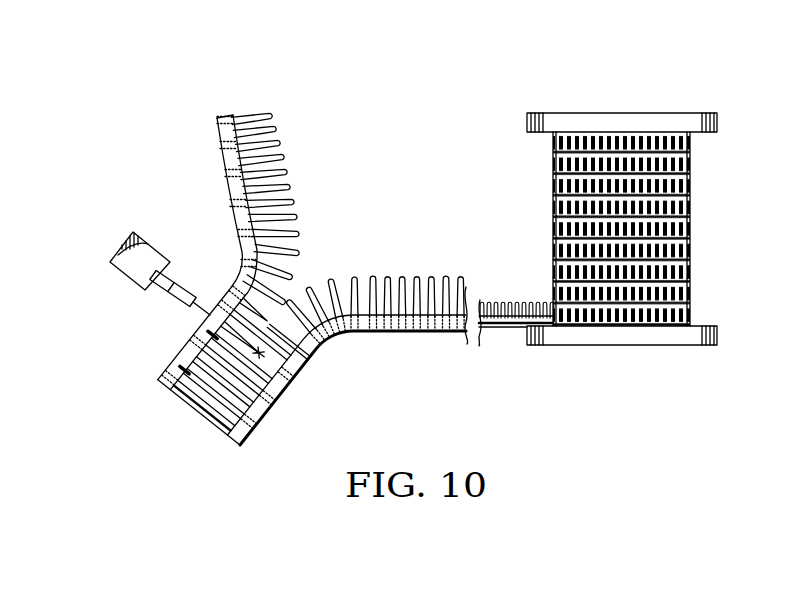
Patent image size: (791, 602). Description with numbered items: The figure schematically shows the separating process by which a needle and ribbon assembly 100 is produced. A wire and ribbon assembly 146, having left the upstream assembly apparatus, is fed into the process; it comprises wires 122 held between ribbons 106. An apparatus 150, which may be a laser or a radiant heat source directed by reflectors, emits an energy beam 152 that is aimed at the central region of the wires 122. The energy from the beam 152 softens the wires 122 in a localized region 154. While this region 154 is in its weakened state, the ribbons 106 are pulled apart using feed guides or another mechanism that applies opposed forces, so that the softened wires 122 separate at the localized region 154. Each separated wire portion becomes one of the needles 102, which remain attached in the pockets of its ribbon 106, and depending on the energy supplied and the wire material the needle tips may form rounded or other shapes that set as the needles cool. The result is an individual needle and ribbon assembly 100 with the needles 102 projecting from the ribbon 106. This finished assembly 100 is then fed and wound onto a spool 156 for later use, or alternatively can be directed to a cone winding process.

The needle and ribbon assembly 100 is at (329, 294).
The needles 102 is at (275, 131).
The ribbon 106 is at (225, 117).
The wires 122 is at (180, 390).
The wire and ribbon assembly 146 is at (207, 430).
The apparatus 150 is at (150, 243).
The energy beam 152 is at (172, 296).
The localized region 154 is at (310, 278).
The spool 156 is at (618, 92).